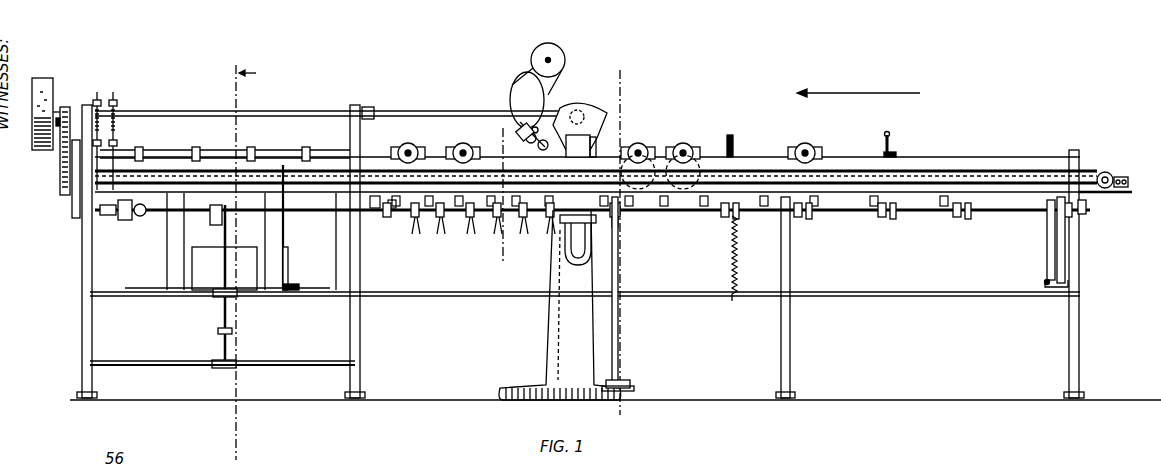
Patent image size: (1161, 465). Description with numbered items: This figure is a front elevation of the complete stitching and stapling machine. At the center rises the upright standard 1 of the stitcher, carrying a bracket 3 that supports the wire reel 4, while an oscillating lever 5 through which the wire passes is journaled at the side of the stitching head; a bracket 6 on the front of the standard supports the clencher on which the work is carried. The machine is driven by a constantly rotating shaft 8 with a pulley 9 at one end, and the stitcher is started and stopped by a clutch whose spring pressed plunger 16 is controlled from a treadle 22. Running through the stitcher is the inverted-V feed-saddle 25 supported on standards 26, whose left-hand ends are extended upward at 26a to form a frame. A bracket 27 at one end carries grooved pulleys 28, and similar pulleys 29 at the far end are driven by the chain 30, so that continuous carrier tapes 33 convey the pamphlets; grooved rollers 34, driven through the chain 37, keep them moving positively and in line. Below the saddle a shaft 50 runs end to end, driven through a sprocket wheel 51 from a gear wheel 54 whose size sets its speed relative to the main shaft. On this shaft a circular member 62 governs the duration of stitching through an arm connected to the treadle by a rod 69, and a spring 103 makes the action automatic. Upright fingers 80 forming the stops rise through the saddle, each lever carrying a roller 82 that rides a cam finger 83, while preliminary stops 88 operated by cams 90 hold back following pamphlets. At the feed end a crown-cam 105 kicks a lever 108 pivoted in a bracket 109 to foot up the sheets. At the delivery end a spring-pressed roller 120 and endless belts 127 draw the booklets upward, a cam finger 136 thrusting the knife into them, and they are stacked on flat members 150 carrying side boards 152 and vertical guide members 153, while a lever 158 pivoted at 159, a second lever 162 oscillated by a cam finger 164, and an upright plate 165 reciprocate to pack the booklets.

The upright standard 1 is at (568, 325).
The bracket 3 is at (580, 117).
The wire reel 4 is at (557, 58).
The oscillating lever 5 is at (529, 111).
The bracket 6 is at (560, 255).
The constantly rotating shaft 8 is at (315, 100).
The pulley 9 is at (42, 82).
The spring pressed plunger 16 is at (241, 254).
The treadle 22 is at (630, 382).
The feed-saddle 25 is at (975, 165).
The standards 26 is at (360, 345).
The extended standard 26a is at (356, 105).
The bracket 27 is at (1098, 196).
The grooved pulleys 28 is at (1115, 175).
The pulleys 29 is at (112, 158).
The chain 30 is at (118, 100).
The carrier-belts or tapes 33 is at (1098, 172).
The grooved rollers 34 is at (688, 146).
The chain 37 is at (398, 142).
The shaft 50 is at (66, 222).
The sprocket wheel 51 is at (70, 218).
The gear wheel 54 is at (60, 196).
The circular member 62 is at (620, 226).
The rod 69 is at (618, 332).
The upright fingers 80 is at (491, 160).
The roller 82 is at (492, 226).
The cam finger 83 is at (420, 230).
The preliminary stops 88 is at (820, 138).
The cams 90 is at (728, 220).
The spring 103 is at (748, 262).
The crown-cam 105 is at (1062, 230).
The lever 108 is at (1048, 260).
The bracket 109 is at (1057, 288).
The roller 120 is at (282, 148).
The endless bands or belts 127 is at (215, 146).
The cam finger 136 is at (146, 212).
The flat members 150 is at (140, 296).
The side board 152 is at (290, 262).
The vertical guide members 153 is at (288, 228).
The lever 158 is at (228, 346).
The pivot 159 is at (212, 368).
The second lever 162 is at (222, 312).
The cam finger 164 is at (214, 226).
The upright plate 165 is at (224, 268).